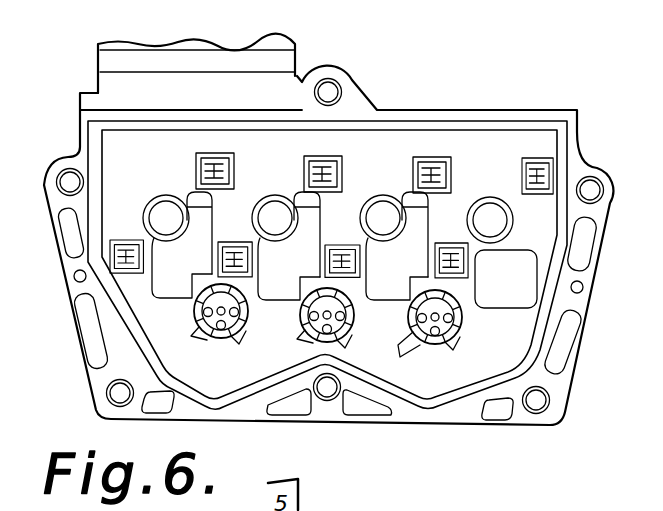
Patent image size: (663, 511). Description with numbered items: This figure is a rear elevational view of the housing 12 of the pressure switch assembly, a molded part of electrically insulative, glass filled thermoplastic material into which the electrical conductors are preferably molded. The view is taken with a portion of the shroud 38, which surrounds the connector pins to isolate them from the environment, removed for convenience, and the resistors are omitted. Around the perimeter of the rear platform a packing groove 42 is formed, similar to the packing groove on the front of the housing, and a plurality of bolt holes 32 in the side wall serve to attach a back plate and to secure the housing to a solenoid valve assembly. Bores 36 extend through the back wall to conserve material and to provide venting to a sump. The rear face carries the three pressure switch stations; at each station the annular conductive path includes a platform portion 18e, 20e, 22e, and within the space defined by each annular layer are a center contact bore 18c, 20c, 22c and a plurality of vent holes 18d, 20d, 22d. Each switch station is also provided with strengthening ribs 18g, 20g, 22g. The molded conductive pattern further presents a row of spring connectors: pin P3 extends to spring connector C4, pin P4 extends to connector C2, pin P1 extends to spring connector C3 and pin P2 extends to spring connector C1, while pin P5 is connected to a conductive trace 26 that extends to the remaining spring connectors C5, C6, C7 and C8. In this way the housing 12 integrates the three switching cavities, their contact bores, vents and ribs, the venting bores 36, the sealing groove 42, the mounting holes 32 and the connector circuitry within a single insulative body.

The housing 12 is at (592, 292).
The shroud 38 is at (207, 43).
The bolt holes 32 is at (336, 91).
The packing groove 42 is at (462, 88).
The bores 36 is at (162, 204).
The conductive trace 26 is at (186, 211).
The platform portion 22e is at (198, 278).
The platform portion 20e is at (303, 277).
The platform portion 18e is at (414, 277).
The center contact bore 22c is at (240, 312).
The center contact bore 20c is at (346, 316).
The center contact bore 18c is at (454, 322).
The vent holes 22d is at (196, 336).
The vent holes 20d is at (308, 344).
The vent holes 18d is at (401, 356).
The strengthening ribs 22g is at (240, 345).
The strengthening ribs 20g is at (348, 346).
The strengthening ribs 18g is at (456, 348).
The spring connector C1 is at (549, 158).
The spring connector C2 is at (448, 158).
The spring connector C3 is at (340, 156).
The spring connector C4 is at (227, 153).
The spring connector C5 is at (137, 241).
The spring connector C6 is at (247, 243).
The spring connector C7 is at (354, 246).
The spring connector C8 is at (462, 244).